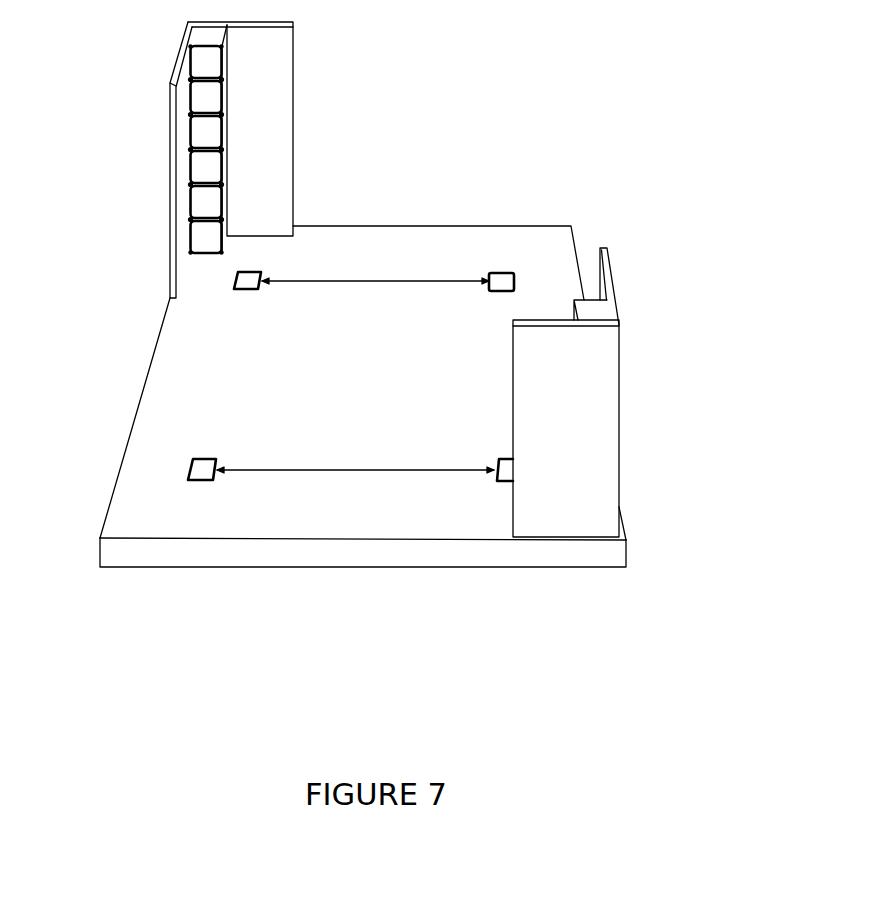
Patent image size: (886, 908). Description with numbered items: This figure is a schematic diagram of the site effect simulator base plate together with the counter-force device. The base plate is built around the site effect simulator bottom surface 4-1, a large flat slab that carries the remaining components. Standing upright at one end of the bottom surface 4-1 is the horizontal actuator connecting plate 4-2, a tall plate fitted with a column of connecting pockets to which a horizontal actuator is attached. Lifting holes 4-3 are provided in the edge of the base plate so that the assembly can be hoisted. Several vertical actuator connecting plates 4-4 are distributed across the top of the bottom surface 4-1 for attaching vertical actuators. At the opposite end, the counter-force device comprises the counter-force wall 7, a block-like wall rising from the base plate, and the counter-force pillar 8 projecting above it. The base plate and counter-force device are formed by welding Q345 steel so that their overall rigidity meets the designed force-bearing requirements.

The site effect simulator bottom surface 4-1 is at (180, 383).
The horizontal actuator connecting plate 4-2 is at (201, 135).
The lifting hole 4-3 is at (161, 552).
The vertical actuator connecting plate 4-4 is at (374, 281).
The counter-force wall 7 is at (595, 460).
The counter-force pillar 8 is at (596, 313).